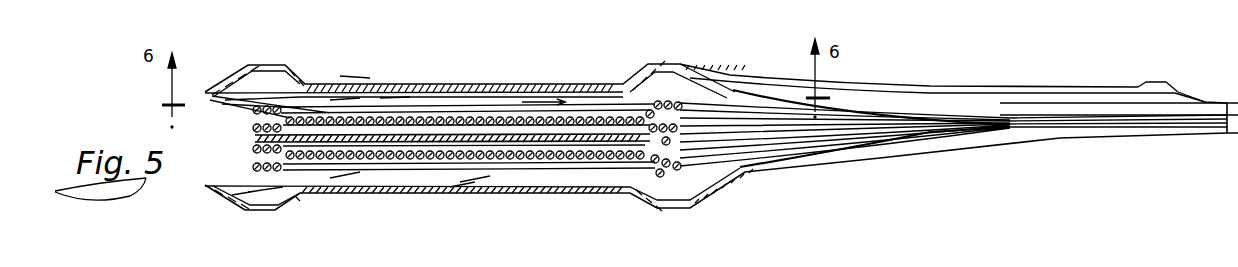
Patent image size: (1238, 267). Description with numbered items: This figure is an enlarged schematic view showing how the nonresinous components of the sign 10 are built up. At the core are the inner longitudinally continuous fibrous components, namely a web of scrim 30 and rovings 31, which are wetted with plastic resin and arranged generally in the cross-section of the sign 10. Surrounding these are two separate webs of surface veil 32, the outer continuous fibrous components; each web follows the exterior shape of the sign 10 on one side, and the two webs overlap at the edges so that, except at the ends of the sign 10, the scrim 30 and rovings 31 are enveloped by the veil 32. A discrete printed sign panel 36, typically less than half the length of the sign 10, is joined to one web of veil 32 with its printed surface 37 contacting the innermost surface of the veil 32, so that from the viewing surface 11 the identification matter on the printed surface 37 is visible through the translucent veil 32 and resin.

The sign 10 is at (1151, 80).
The viewing surface 11 is at (1194, 98).
The web of scrim 30 is at (322, 130).
The rovings 31 is at (255, 167).
The webs of surface veil 32 is at (668, 63).
The sign panel 36 is at (470, 101).
The printed surface 37 is at (402, 92).